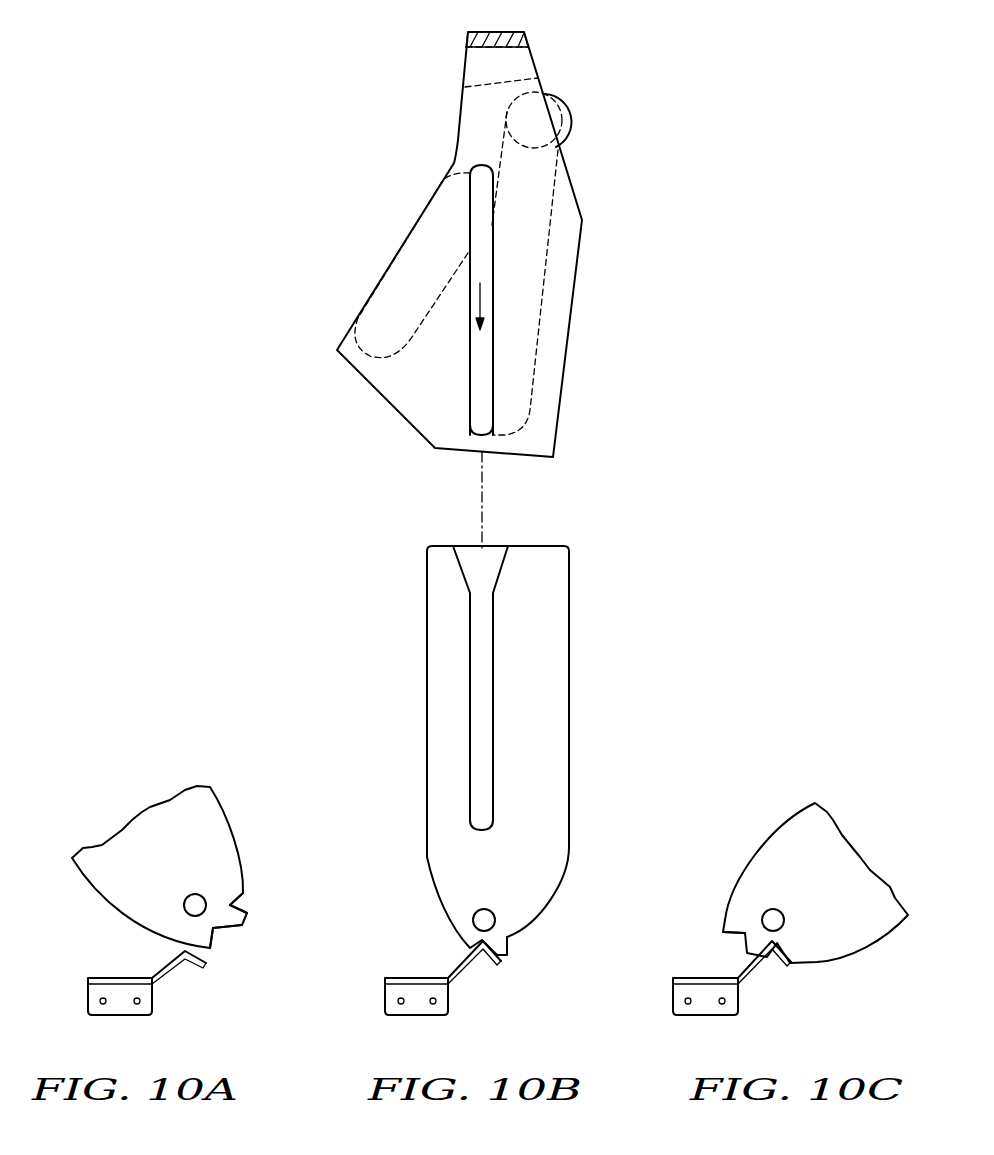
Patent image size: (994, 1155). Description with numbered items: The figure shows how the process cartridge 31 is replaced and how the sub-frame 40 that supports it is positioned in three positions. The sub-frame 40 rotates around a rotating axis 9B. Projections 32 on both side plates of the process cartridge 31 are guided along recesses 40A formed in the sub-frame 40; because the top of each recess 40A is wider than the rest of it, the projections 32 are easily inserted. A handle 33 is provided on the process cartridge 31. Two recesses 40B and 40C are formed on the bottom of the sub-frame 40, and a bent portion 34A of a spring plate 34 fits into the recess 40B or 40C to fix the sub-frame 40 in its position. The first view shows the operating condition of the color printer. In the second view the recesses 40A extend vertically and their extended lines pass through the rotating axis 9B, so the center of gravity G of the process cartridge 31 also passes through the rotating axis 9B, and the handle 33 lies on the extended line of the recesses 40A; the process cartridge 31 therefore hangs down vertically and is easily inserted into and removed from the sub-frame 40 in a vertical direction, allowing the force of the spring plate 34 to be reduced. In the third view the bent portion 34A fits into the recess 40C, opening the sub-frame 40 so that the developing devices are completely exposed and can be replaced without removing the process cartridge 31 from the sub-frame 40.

In FIG. 10B, the process cartridge 31 is at (578, 275).
In FIG. 10B, the projections 32 is at (470, 375).
In FIG. 10B, the handle 33 is at (523, 42).
In FIG. 10B, the center of gravity G is at (479, 283).
In FIG. 10B, the sub-frame 40 is at (570, 602).
In FIG. 10A, the sub-frame 40 is at (110, 905).
In FIG. 10C, the sub-frame 40 is at (775, 835).
In FIG. 10B, the recesses 40A is at (470, 620).
In FIG. 10A, the recess 40B is at (218, 933).
In FIG. 10C, the recess 40B is at (743, 940).
In FIG. 10A, the recess 40C is at (238, 905).
In FIG. 10B, the rotating axis 9B is at (492, 910).
In FIG. 10A, the rotating axis 9B is at (194, 893).
In FIG. 10C, the rotating axis 9B is at (782, 908).
In FIG. 10B, the spring plate 34 is at (410, 1020).
In FIG. 10A, the spring plate 34 is at (122, 1013).
In FIG. 10C, the spring plate 34 is at (703, 1020).
In FIG. 10B, the bent portion 34A is at (494, 968).
In FIG. 10C, the bent portion 34A is at (775, 962).